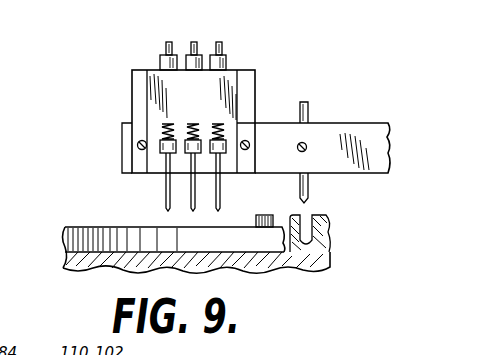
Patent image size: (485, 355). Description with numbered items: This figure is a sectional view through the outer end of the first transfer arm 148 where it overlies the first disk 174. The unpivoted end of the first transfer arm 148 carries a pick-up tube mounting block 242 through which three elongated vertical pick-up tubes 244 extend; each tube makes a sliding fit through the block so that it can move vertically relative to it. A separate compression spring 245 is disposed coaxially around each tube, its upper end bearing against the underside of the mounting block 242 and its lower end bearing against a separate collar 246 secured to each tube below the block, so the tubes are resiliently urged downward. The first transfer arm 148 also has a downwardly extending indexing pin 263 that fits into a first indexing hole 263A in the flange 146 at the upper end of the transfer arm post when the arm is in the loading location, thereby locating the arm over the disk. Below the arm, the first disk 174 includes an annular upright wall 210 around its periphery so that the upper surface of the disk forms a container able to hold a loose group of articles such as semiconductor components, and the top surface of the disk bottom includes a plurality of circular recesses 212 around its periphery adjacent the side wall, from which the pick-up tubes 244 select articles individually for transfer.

The pick-up tube mounting block 242 is at (228, 86).
The pick-up tubes 244 is at (219, 43).
The compression spring 245 is at (222, 120).
The collar 246 is at (212, 155).
The first transfer arm 148 is at (357, 175).
The indexing pin 263 is at (307, 110).
The first indexing hole 263A is at (303, 213).
The flange 146 is at (272, 215).
The annular upright wall 210 is at (103, 227).
The first disk 174 is at (63, 228).
The circular recesses 212 is at (63, 258).